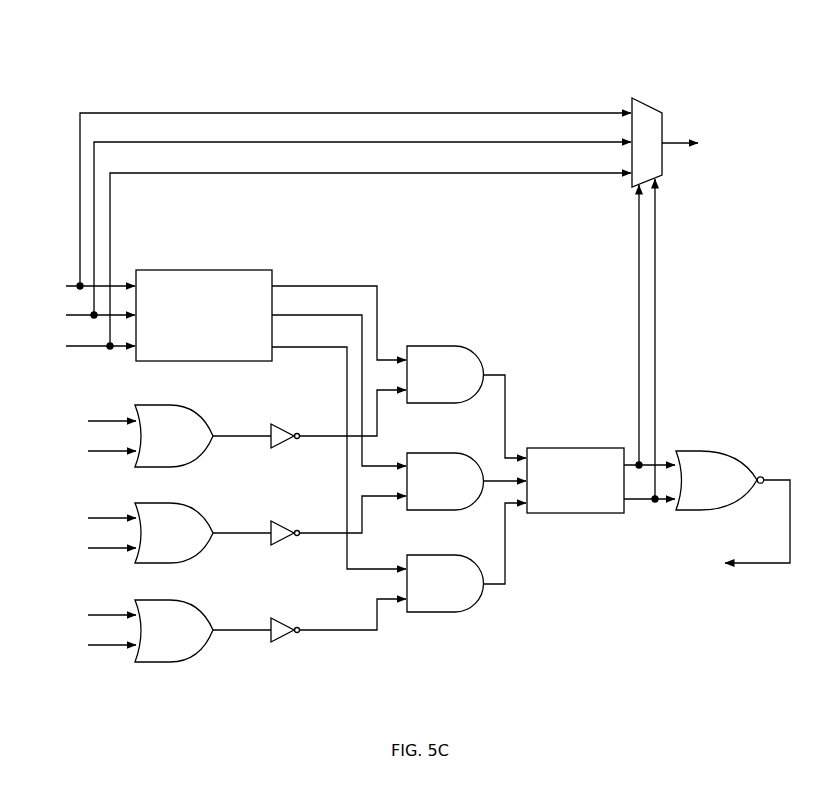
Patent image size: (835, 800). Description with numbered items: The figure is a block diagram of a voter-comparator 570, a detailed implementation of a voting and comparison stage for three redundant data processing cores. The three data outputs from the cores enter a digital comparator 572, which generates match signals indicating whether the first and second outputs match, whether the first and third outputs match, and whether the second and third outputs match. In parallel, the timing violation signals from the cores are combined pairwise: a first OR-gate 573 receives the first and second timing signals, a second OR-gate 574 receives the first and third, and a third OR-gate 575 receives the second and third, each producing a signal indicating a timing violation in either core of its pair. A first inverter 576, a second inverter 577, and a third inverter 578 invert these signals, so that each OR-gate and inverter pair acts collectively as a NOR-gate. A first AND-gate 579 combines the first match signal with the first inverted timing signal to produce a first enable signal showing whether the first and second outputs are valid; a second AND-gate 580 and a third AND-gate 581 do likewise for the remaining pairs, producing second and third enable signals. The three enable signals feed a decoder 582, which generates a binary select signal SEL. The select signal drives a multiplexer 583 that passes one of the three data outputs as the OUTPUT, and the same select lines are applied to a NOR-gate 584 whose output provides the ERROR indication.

The voter-comparator 570 is at (400, 70).
The digital comparator 572 is at (271, 416).
The first OR-gate 573 is at (190, 405).
The second OR-gate 574 is at (190, 503).
The third OR-gate 575 is at (190, 600).
The first inverter 576 is at (280, 424).
The second inverter 577 is at (280, 521).
The third inverter 578 is at (280, 618).
The first AND-gate 579 is at (428, 346).
The second AND-gate 580 is at (423, 453).
The third AND-gate 581 is at (423, 555).
The decoder 582 is at (572, 448).
The multiplexer 583 is at (646, 101).
The NOR-gate 584 is at (692, 451).